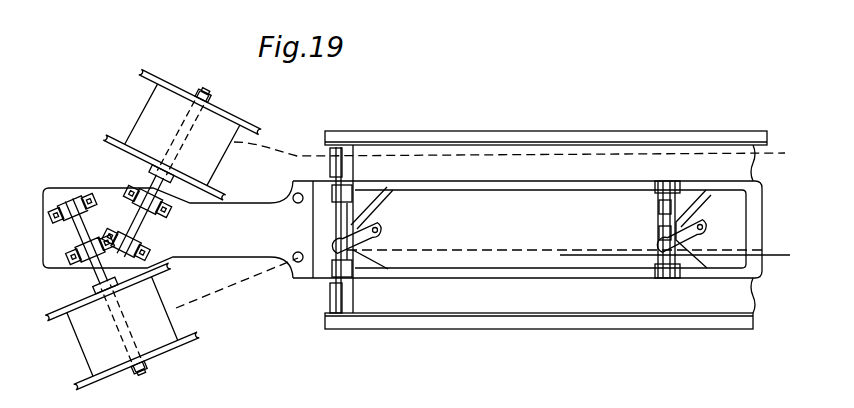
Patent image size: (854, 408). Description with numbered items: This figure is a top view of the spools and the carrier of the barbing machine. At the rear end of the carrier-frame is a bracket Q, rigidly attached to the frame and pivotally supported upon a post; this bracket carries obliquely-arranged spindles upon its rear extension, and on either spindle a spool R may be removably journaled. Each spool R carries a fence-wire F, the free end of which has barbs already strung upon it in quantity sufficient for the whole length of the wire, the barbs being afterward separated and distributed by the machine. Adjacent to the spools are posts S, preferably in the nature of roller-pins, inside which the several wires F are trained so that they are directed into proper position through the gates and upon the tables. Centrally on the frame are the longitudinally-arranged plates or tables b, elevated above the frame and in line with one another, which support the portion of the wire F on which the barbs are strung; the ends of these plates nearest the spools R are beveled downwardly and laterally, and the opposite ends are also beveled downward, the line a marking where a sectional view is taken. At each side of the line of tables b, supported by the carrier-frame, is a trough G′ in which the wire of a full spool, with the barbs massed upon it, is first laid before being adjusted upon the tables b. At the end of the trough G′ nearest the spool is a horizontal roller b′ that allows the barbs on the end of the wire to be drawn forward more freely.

The spool R is at (153, 229).
The bracket Q is at (168, 229).
The posts S is at (286, 227).
The fence-wire F is at (480, 225).
The trough G′ is at (530, 230).
The plates or tables b is at (447, 235).
The section line a is at (574, 254).
The horizontal roller b′ is at (326, 300).
The rod and nuts C′ is at (641, 250).